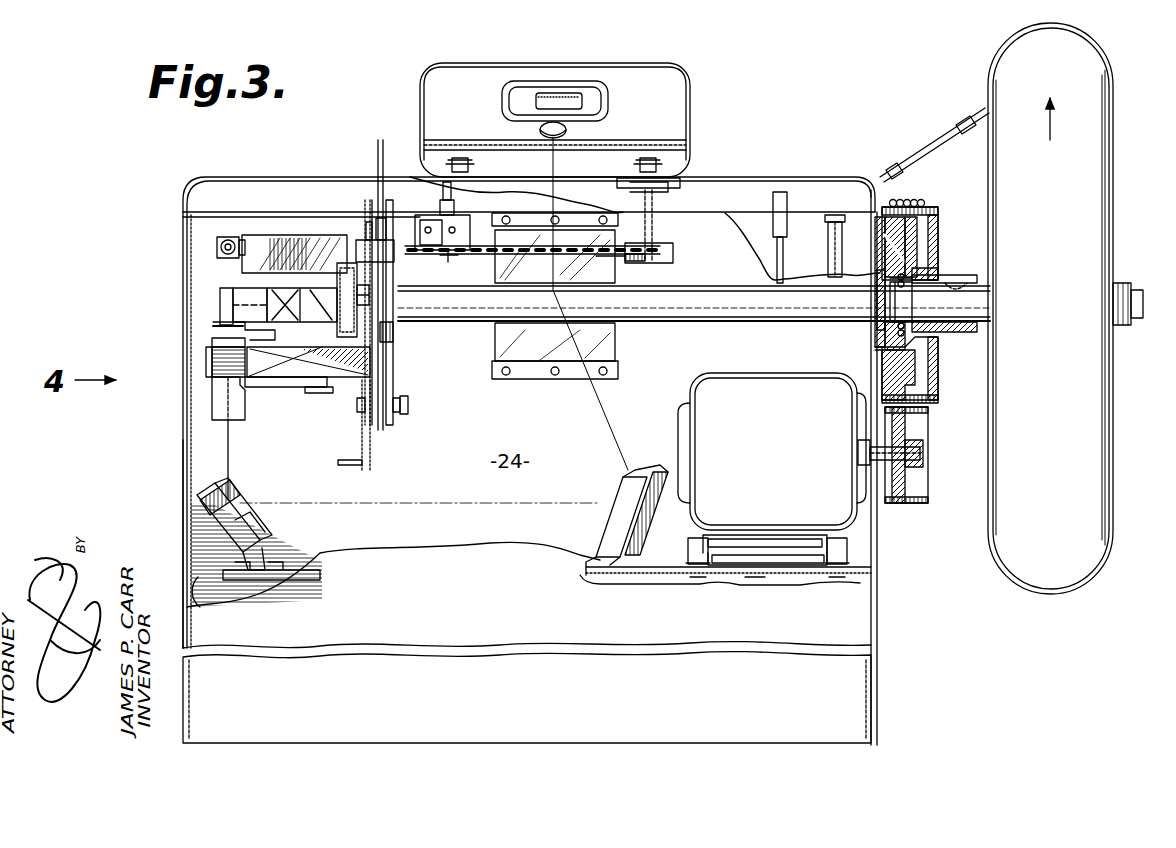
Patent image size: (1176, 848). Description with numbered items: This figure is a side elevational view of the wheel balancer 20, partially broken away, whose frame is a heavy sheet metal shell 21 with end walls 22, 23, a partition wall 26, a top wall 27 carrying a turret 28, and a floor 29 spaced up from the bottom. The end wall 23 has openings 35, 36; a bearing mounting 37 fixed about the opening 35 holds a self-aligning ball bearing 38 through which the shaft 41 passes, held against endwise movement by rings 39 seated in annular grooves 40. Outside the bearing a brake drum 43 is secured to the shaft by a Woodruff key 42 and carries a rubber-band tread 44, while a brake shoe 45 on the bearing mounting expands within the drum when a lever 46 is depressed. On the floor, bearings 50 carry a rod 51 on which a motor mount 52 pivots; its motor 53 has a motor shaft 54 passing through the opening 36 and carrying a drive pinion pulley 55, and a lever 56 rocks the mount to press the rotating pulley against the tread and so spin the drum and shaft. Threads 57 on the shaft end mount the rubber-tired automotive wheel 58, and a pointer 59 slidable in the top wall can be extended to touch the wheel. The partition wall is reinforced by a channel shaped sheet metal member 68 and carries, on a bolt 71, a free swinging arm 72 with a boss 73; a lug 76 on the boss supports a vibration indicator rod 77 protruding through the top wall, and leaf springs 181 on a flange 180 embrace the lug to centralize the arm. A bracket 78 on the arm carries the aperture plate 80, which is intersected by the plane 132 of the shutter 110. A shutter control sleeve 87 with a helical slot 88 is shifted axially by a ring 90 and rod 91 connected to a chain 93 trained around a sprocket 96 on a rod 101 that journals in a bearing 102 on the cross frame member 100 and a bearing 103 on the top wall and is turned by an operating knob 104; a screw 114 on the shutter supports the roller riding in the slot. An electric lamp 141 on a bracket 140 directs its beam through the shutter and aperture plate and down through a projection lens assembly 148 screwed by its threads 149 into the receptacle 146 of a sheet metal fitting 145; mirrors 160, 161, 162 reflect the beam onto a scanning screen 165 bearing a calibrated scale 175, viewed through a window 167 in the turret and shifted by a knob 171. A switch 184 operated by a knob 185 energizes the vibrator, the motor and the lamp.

The wheel balancer 20 is at (887, 102).
The sheet metal shell 21 is at (879, 607).
The end wall 22 is at (183, 455).
The end wall 23 is at (878, 532).
The partition wall 26 is at (372, 458).
The top wall 27 is at (300, 175).
The turret 28 is at (450, 68).
The floor 29 is at (778, 572).
The opening 35 is at (873, 327).
The opening 36 is at (870, 442).
The bearing mounting 37 is at (880, 268).
The self-aligning ball bearing 38 is at (918, 266).
The rings 39 is at (892, 284).
The annular grooves 40 is at (911, 302).
The shaft 41 is at (734, 307).
The Woodruff key 42 is at (968, 278).
The brake drum 43 is at (940, 209).
The rubber-band tread 44 is at (908, 201).
The brake shoe 45 is at (918, 229).
The lever 46 is at (828, 228).
The bearings 50 is at (695, 560).
The rod 51 is at (754, 565).
The motor mount 52 is at (757, 535).
The motor 53 is at (772, 451).
The motor shaft 54 is at (870, 455).
The drive pinion pulley 55 is at (918, 427).
The lever 56 is at (778, 191).
The threads 57 is at (1124, 283).
The rubber-tired automotive wheel 58 is at (1083, 180).
The pointer 59 is at (876, 176).
The channel shaped sheet metal member 68 is at (343, 466).
The bolt 71 is at (409, 404).
The free swinging arm 72 is at (386, 353).
The boss 73 is at (388, 323).
The lug 76 is at (382, 263).
The vibration indicator rod 77 is at (379, 168).
The bracket 78 is at (332, 370).
The aperture plate 80 is at (214, 323).
The shutter control sleeve 87 is at (330, 305).
The helical slot 88 is at (287, 323).
The ring 90 is at (347, 302).
The rod 91 is at (485, 262).
The perforated steel band or chain 93 is at (548, 255).
The sprocket 96 is at (660, 262).
The cross frame member 100 is at (674, 250).
The rod 101 is at (653, 230).
The bearing 102 is at (625, 262).
The bearing 103 is at (682, 188).
The operating knob 104 is at (665, 160).
The shutter 110 is at (252, 295).
The screw 114 is at (277, 289).
The plane 132 is at (231, 433).
The bracket 140 is at (281, 235).
The electric lamp 141 is at (229, 236).
The sheet metal fitting 145 is at (292, 385).
The receptacle 146 is at (212, 360).
The projection lens assembly 148 is at (212, 407).
The threads 149 is at (212, 342).
The mirror 160 is at (229, 499).
The mirror 161 is at (616, 522).
The mirror 162 is at (608, 344).
The scanning screen 165 is at (582, 90).
The window 167 is at (599, 98).
The knob 171 is at (567, 130).
The calibrated scale 175 is at (541, 91).
The flange 180 is at (388, 217).
The leaf springs 181 is at (375, 236).
The switch 184 is at (448, 240).
The knob 185 is at (475, 160).